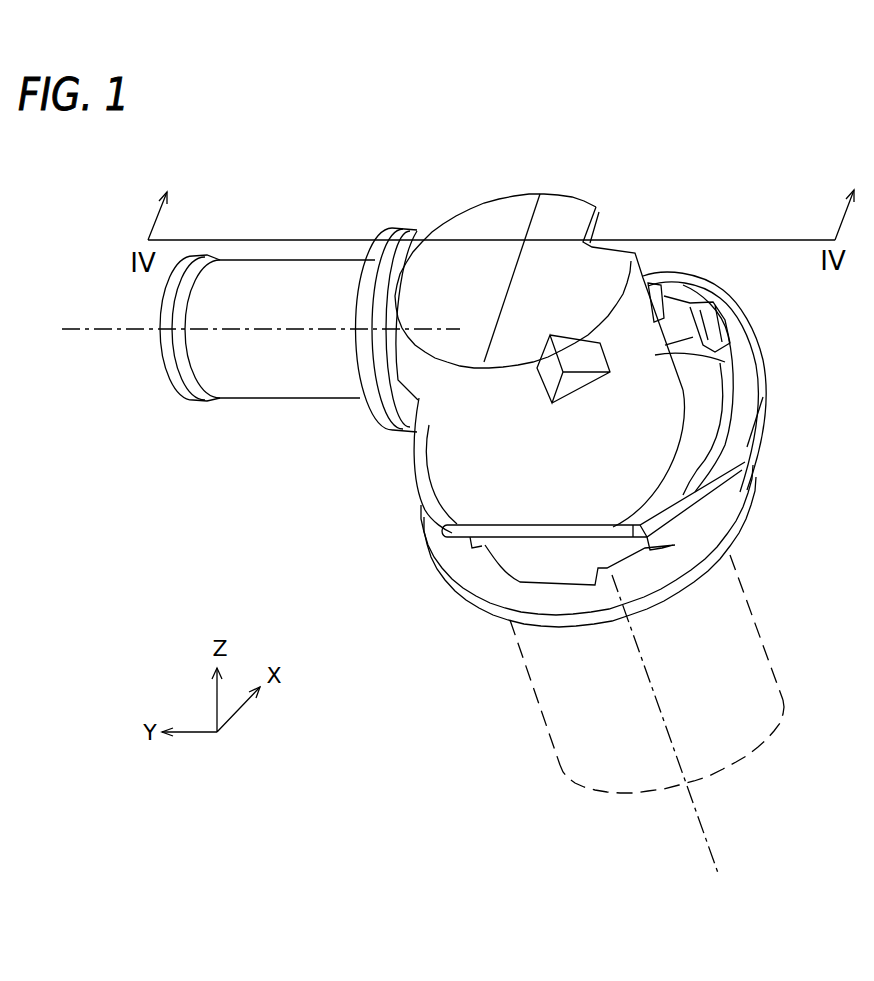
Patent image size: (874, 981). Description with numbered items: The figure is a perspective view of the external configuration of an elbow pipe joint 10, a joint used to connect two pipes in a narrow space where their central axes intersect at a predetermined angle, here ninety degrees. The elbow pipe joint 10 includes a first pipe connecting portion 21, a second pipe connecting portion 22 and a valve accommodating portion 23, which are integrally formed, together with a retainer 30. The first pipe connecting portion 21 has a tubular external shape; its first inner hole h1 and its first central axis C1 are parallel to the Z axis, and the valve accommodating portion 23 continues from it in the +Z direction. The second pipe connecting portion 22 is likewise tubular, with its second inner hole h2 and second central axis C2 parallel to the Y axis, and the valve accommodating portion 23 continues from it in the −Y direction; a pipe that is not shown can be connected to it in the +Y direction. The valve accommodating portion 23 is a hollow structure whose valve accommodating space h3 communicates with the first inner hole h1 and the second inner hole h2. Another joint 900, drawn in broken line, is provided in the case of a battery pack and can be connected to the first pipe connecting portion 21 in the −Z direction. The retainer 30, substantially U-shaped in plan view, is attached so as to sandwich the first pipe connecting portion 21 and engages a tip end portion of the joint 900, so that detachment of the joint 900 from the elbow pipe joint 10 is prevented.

The elbow pipe joint 10 is at (666, 193).
The first pipe connecting portion 21 is at (414, 551).
The second pipe connecting portion 22 is at (337, 400).
The valve accommodating portion 23 is at (457, 438).
The retainer 30 is at (755, 337).
The joint 900 is at (778, 670).
The first inner hole h1 is at (519, 550).
The second inner hole h2 is at (262, 371).
The valve accommodating space h3 is at (646, 368).
The first central axis C1 is at (715, 858).
The second central axis C2 is at (75, 328).